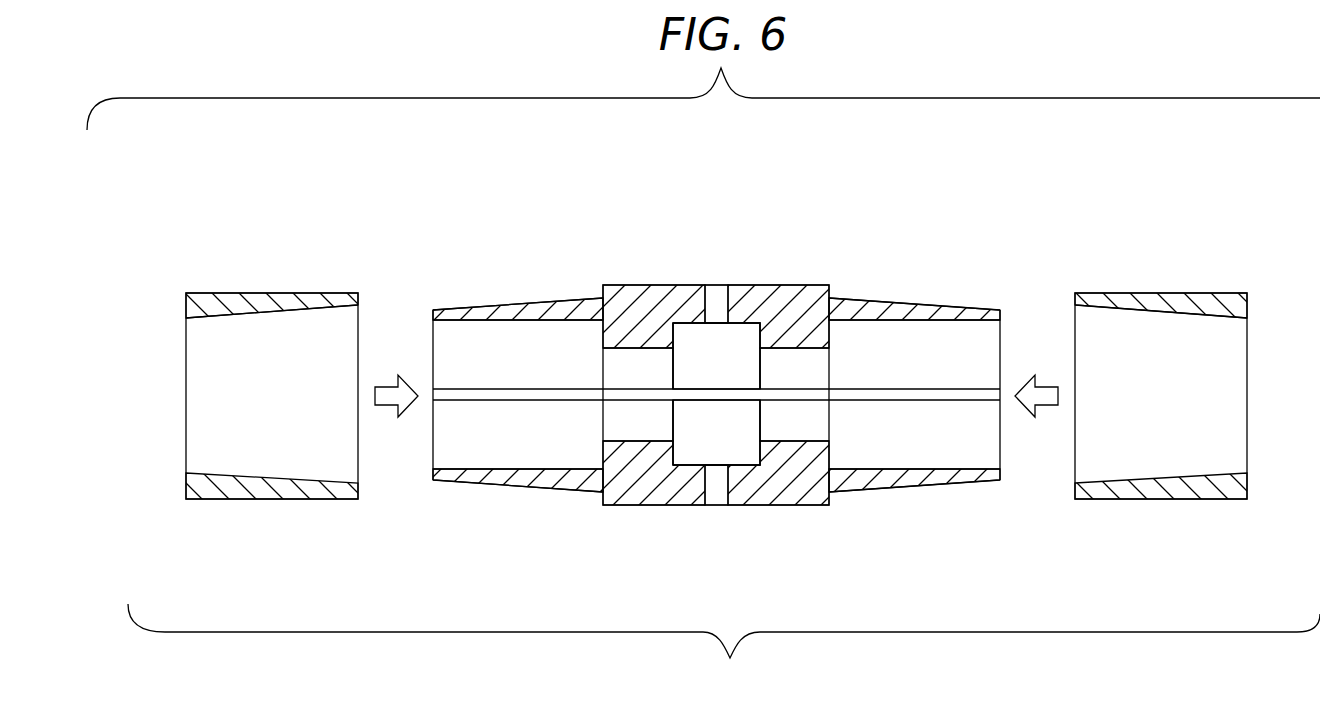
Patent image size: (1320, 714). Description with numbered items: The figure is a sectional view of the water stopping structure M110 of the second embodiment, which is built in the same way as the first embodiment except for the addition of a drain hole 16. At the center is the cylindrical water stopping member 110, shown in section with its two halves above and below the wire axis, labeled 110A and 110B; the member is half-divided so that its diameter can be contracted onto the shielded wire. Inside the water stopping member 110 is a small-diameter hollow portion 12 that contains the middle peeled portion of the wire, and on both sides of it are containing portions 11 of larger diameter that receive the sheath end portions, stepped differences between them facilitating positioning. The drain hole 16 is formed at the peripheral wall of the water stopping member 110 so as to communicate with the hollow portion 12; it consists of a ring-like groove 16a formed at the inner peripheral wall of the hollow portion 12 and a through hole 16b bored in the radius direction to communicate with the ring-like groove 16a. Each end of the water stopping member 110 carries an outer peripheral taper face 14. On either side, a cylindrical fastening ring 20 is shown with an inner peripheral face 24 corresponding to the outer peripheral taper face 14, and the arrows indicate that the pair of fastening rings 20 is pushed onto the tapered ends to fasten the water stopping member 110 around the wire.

The containing portion 11 is at (558, 345).
The hollow portion 12 is at (632, 368).
The outer peripheral taper face 14 is at (503, 298).
The drain hole 16 is at (675, 202).
The ring-like groove 16a is at (740, 336).
The through hole 16b is at (718, 298).
The fastening ring 20 is at (279, 293).
The inner peripheral face 24 is at (246, 313).
The water stopping member 110 is at (812, 285).
The upper adapter half 110A is at (838, 287).
The lower adapter half 110B is at (828, 512).
The water stopping structure M110 is at (724, 649).